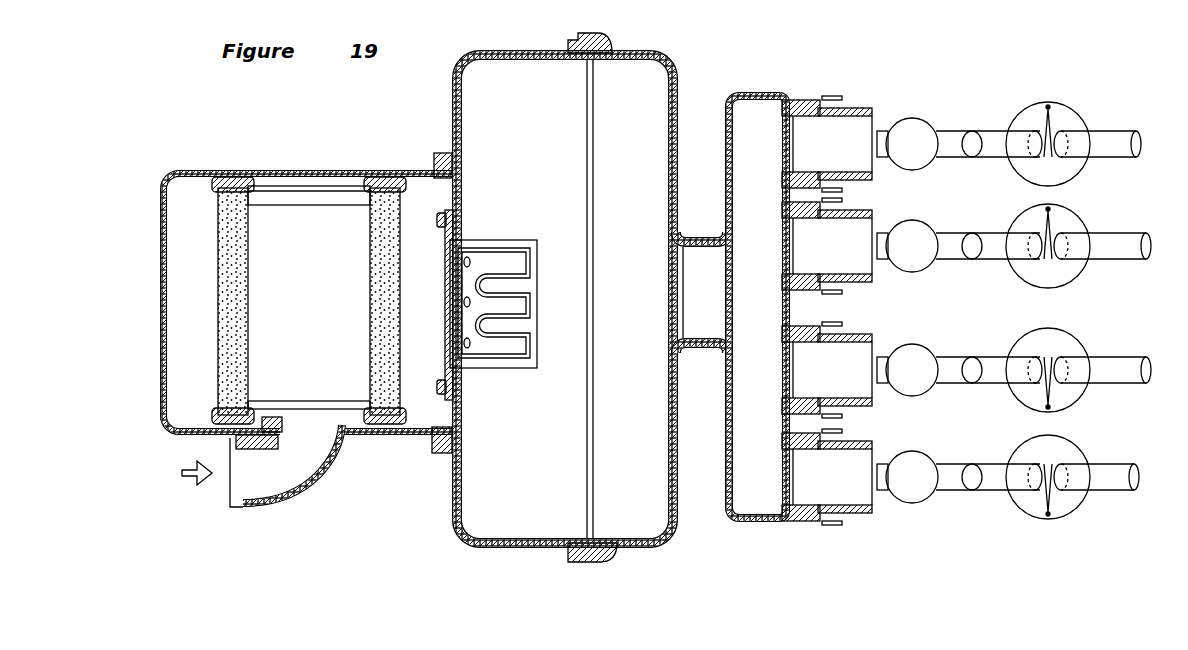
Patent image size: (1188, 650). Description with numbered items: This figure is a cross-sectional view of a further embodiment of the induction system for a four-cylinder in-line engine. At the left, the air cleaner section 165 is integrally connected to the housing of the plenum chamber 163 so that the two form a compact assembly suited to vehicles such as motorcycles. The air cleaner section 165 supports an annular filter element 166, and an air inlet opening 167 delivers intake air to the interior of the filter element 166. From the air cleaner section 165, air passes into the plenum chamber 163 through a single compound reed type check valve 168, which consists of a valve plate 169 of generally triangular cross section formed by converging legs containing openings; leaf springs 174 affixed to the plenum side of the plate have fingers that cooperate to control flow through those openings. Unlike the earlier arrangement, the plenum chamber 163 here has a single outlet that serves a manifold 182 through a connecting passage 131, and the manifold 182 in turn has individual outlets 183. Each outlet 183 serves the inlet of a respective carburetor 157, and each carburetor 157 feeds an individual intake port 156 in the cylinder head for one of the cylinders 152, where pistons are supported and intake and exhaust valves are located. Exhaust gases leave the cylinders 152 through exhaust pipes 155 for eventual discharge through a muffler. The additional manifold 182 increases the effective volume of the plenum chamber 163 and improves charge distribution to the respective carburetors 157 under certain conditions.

The connecting neck passage 131 is at (698, 232).
The cylinder 152 is at (1074, 178).
The exhaust pipe 155 is at (1122, 158).
The intake port 156 is at (993, 158).
The carburetor 157 is at (912, 170).
The plenum chamber 163 is at (648, 67).
The air cleaner section 165 is at (281, 160).
The filter element 166 is at (207, 168).
The air inlet opening 167 is at (240, 492).
The reed type check valve 168 is at (486, 205).
The valve plate 169 is at (445, 328).
The leaf spring 174 is at (533, 290).
The manifold 182 is at (757, 92).
The individual outlet 183 is at (809, 100).